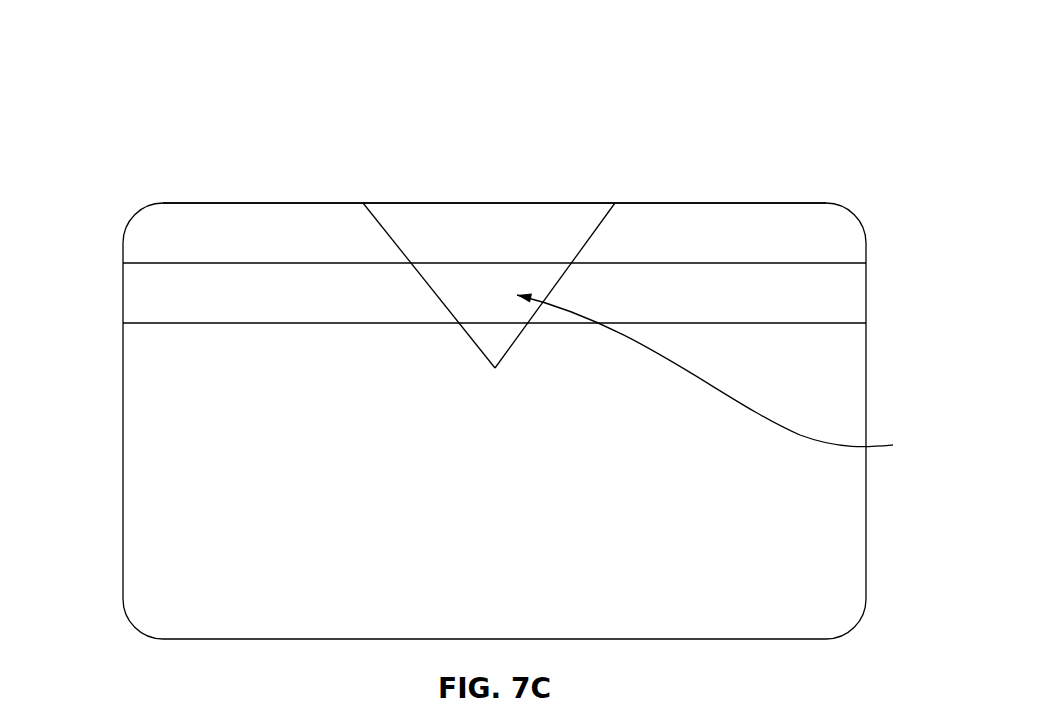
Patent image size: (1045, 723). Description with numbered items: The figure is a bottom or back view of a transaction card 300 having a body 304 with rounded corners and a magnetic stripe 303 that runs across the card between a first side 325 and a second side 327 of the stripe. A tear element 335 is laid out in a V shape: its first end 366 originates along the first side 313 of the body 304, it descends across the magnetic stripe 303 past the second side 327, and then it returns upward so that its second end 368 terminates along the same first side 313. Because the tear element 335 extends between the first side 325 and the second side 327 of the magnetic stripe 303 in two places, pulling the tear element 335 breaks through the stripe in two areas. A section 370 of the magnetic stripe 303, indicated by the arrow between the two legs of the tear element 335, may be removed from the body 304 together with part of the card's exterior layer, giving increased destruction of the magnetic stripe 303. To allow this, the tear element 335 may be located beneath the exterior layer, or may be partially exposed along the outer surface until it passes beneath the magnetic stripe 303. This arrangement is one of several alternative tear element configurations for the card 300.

The card 300 is at (490, 326).
The magnetic stripe 303 is at (537, 283).
The body 304 is at (838, 573).
The first side 313 is at (706, 203).
The first side 325 is at (822, 263).
The second side 327 is at (832, 323).
The tear element 335 is at (514, 245).
The first end 366 is at (376, 219).
The second end 368 is at (603, 220).
The section 370 is at (731, 378).